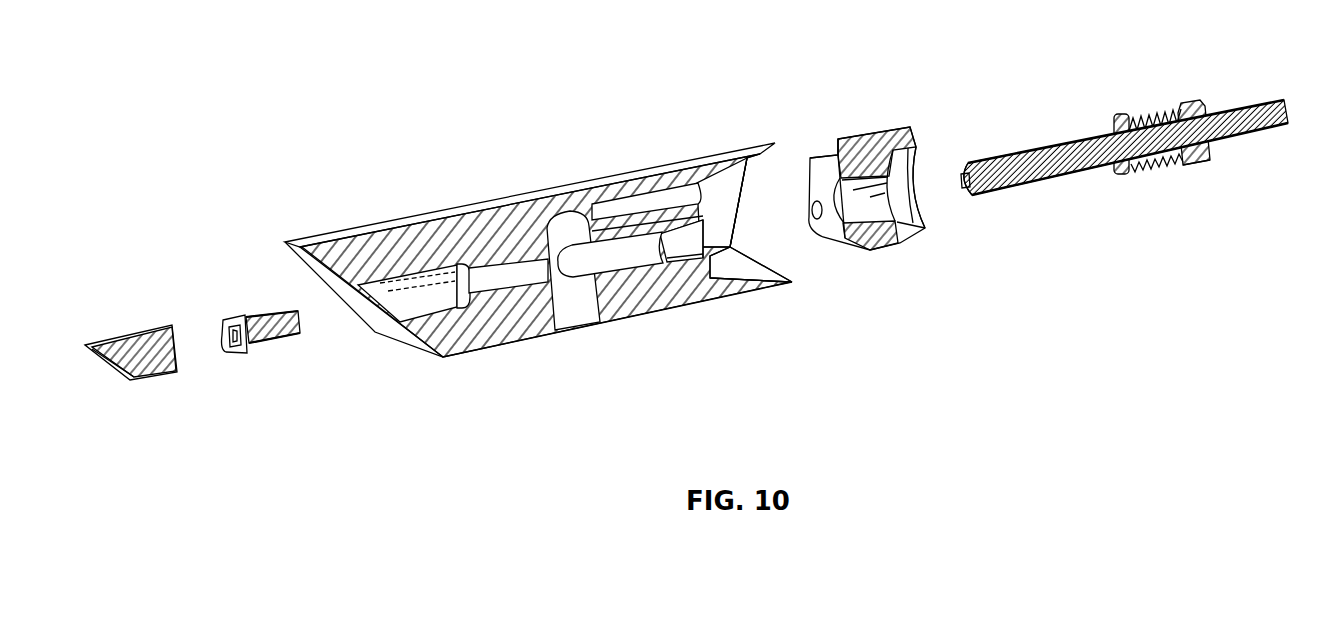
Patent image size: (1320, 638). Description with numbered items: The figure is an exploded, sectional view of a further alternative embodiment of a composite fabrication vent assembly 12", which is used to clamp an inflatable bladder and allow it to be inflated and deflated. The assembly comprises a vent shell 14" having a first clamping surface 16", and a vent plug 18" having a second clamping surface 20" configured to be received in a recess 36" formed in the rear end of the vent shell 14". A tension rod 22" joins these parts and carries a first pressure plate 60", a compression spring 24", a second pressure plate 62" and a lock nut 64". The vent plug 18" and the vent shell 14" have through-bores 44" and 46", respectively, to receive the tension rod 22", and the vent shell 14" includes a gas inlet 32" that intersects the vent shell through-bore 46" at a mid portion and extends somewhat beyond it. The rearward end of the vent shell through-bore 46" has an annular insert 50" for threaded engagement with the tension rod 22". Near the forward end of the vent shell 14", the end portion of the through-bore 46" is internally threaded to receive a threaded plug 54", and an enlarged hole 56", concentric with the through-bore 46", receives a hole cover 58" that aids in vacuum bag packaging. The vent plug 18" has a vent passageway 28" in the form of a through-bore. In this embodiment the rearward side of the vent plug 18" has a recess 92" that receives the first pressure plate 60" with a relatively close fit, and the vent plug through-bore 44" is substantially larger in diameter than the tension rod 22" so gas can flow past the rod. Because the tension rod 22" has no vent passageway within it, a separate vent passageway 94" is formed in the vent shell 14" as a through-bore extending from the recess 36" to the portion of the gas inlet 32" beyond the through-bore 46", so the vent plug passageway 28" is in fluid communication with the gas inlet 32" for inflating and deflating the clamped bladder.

The composite fabrication vent assembly 12 is at (334, 72).
The vent shell 14 is at (370, 217).
The first clamping surface 16 is at (747, 270).
The vent plug 18 is at (878, 152).
The second clamping surface 20 is at (838, 150).
The tension rod 22 is at (1053, 160).
The compression spring 24 is at (1165, 160).
The vent passageway 28 is at (815, 210).
The gas inlet 32 is at (583, 303).
The recess 36 is at (753, 252).
The vent plug through-bore 44 is at (866, 211).
The vent shell through-bore 46 is at (624, 258).
The annular insert 50 is at (688, 248).
The threaded plug 54 is at (281, 337).
The enlarged hole 56 is at (438, 295).
The hole cover 58 is at (157, 370).
The first pressure plate 60 is at (1121, 115).
The second pressure plate 62 is at (1173, 103).
The lock nut 64 is at (1208, 154).
The recess 92 is at (907, 215).
The vent passageway 94 is at (634, 208).